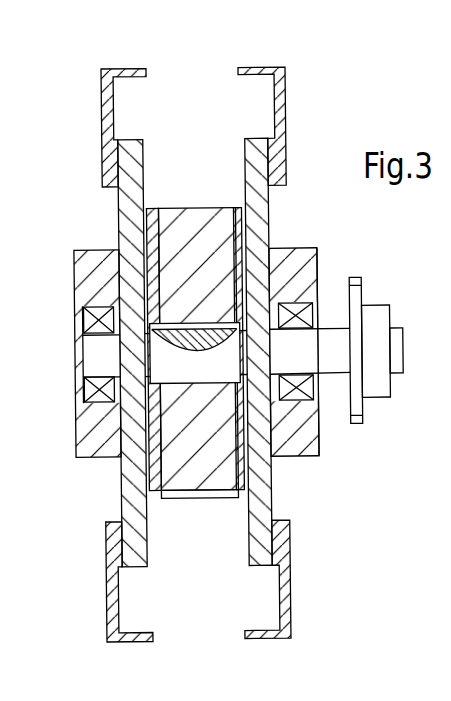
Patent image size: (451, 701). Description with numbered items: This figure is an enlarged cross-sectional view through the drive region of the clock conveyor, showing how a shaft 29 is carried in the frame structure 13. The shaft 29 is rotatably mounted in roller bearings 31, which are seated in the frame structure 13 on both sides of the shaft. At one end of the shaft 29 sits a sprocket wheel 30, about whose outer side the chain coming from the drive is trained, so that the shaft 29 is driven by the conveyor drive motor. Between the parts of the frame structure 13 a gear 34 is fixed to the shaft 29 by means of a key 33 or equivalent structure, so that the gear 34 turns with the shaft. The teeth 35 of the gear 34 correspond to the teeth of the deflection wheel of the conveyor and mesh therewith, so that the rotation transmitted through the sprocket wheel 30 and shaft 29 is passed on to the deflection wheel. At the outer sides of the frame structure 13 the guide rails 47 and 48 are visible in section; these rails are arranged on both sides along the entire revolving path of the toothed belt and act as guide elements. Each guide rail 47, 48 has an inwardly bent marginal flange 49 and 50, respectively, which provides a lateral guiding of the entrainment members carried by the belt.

The frame structure 13 is at (276, 221).
The shaft 29 is at (331, 366).
The sprocket wheel 30 is at (362, 294).
The roller bearings 31 is at (86, 318).
The key 33 is at (190, 324).
The gear 34 is at (212, 490).
The teeth 35 is at (173, 498).
The guide rail 47 is at (104, 110).
The guide rail 48 is at (287, 95).
The lateral flange 49 is at (126, 71).
The lateral flange 50 is at (263, 68).